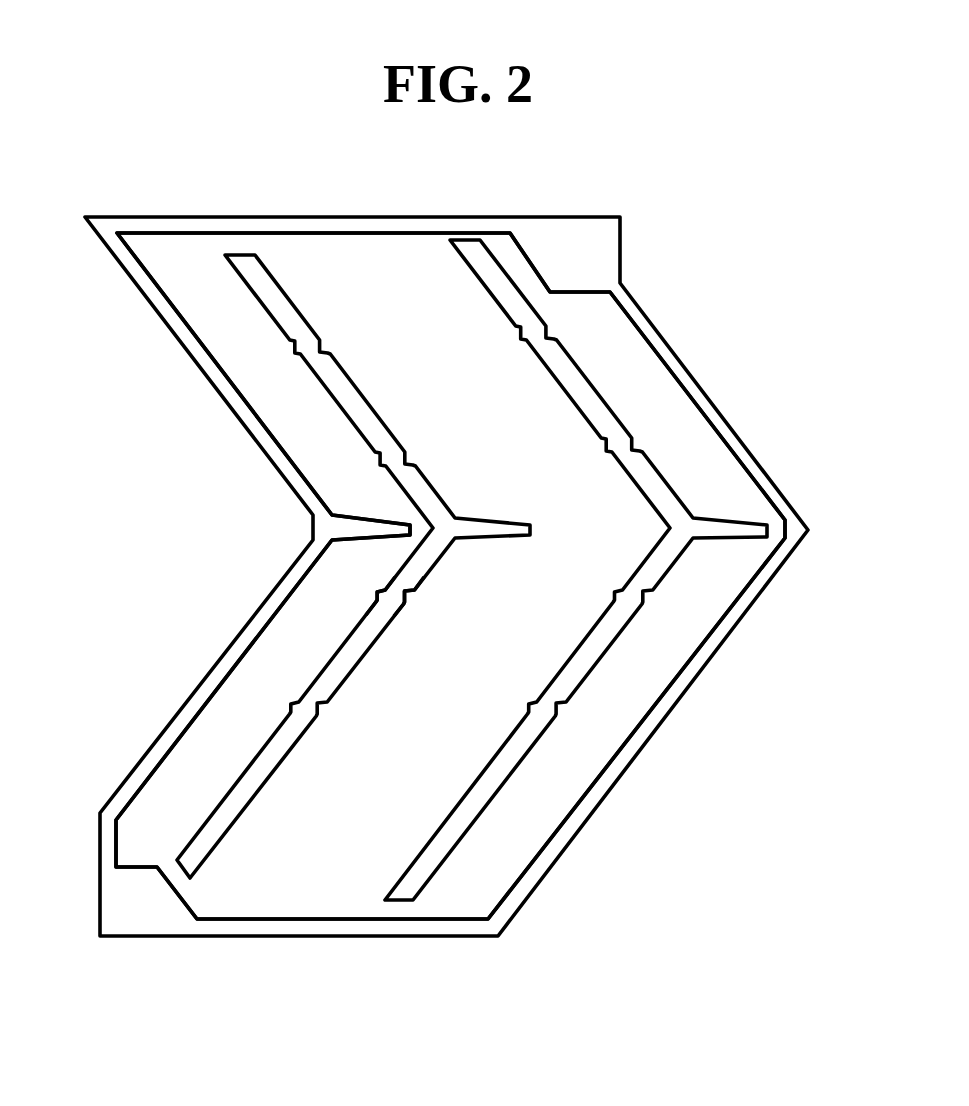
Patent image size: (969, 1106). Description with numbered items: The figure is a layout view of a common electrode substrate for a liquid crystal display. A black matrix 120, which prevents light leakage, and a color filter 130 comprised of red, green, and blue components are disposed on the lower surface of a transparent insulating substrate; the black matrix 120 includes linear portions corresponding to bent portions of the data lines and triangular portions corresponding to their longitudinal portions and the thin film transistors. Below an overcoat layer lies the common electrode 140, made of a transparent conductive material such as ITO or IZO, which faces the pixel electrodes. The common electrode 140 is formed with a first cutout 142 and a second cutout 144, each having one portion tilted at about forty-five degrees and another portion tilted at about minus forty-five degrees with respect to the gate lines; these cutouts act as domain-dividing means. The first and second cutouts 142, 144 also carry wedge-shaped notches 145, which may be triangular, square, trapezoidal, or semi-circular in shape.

The black matrix 120 is at (178, 323).
The color filter 130 is at (752, 610).
The common electrode 140 is at (302, 266).
The first cutout 142 is at (328, 392).
The second cutout 144 is at (578, 662).
The wedge-shaped notch 145 is at (383, 595).